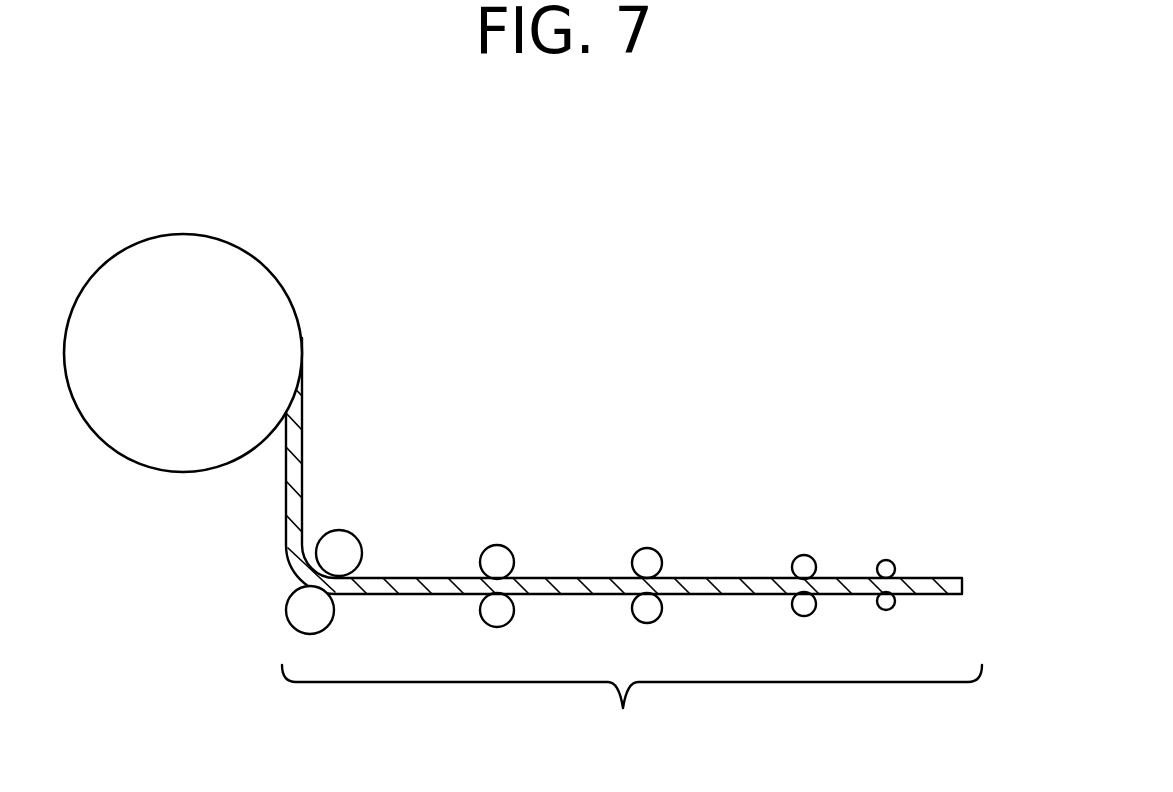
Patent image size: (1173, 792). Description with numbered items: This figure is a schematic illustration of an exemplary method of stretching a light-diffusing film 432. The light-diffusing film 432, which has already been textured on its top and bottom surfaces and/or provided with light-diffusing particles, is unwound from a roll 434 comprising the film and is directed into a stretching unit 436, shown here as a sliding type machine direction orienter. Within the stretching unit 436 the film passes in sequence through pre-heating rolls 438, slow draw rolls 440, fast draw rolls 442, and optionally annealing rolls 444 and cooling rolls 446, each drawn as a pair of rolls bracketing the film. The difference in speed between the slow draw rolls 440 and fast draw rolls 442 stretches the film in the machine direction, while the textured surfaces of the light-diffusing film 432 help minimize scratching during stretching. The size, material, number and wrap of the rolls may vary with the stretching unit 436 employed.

The light-diffusing film 432 is at (303, 447).
The roll 434 is at (245, 265).
The stretching unit 436 is at (632, 709).
The pre-heating rolls 438 is at (355, 537).
The slow draw rolls 440 is at (509, 550).
The fast draw rolls 442 is at (648, 548).
The annealing rolls 444 is at (801, 555).
The cooling rolls 446 is at (887, 560).